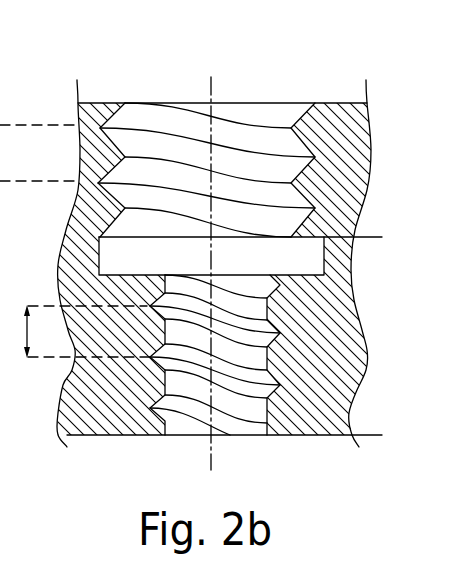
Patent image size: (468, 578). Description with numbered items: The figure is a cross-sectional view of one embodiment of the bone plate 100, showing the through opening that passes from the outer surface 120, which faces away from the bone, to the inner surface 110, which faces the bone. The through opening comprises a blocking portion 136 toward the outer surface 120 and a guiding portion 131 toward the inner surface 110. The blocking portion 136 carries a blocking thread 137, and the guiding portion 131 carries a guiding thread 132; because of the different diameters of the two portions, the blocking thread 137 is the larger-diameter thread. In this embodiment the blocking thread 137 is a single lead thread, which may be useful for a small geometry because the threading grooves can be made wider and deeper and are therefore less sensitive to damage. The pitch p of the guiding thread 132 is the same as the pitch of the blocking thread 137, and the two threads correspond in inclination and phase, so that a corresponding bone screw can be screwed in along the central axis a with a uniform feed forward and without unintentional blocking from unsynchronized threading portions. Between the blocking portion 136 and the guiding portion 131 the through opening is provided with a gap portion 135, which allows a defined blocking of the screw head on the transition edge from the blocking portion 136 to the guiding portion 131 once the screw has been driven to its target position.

The bone plate 100 is at (331, 86).
The inner surface 110 is at (309, 435).
The outer surface 120 is at (97, 103).
The guiding portion 131 is at (374, 435).
The guiding thread 132 is at (268, 392).
The gap portion 135 is at (374, 239).
The blocking portion 136 is at (374, 103).
The blocking thread 137 is at (287, 128).
The axis a is at (208, 457).
The thread pitch p is at (75, 241).